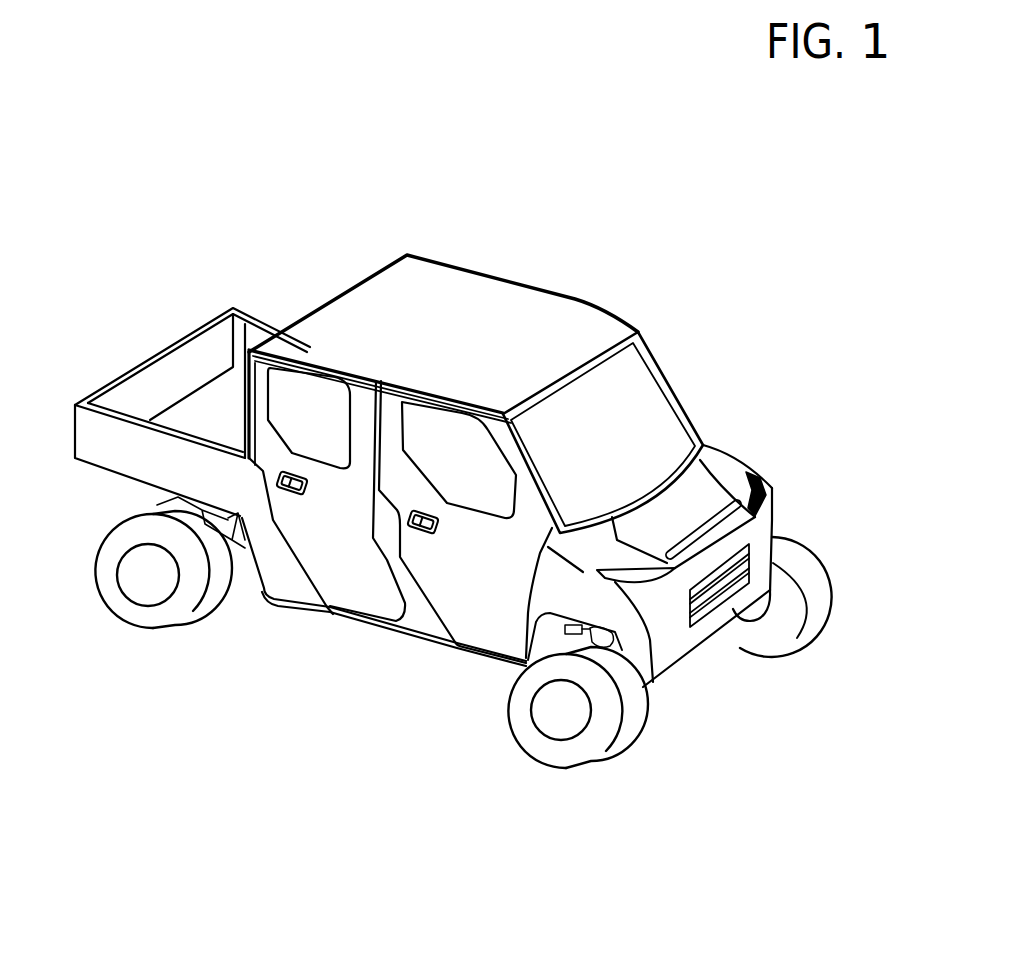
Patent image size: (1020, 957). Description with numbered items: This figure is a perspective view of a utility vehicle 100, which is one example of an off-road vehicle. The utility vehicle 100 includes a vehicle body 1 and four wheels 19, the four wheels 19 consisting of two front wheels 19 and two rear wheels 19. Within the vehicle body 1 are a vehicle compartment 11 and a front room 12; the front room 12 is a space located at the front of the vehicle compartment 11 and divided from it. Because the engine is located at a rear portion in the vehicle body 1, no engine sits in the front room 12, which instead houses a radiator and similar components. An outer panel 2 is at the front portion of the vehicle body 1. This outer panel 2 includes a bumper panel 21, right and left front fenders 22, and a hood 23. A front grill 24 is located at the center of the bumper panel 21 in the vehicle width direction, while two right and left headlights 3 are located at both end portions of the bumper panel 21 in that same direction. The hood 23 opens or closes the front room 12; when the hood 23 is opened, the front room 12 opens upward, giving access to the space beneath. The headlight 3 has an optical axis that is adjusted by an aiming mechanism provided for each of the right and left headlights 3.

The utility vehicle 100 is at (281, 238).
The vehicle body 1 is at (590, 302).
The outer panel 2 is at (796, 503).
The headlight 3 is at (774, 490).
The vehicle compartment 11 is at (640, 388).
The front room 12 is at (697, 480).
The wheel 19 is at (112, 602).
The bumper panel 21 is at (715, 627).
The front fender 22 is at (748, 467).
The hood 23 is at (718, 490).
The front grill 24 is at (730, 590).